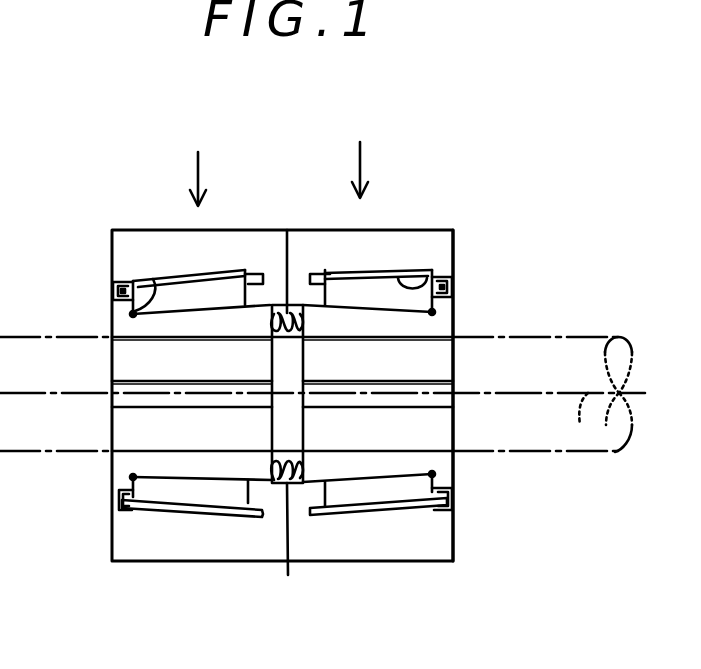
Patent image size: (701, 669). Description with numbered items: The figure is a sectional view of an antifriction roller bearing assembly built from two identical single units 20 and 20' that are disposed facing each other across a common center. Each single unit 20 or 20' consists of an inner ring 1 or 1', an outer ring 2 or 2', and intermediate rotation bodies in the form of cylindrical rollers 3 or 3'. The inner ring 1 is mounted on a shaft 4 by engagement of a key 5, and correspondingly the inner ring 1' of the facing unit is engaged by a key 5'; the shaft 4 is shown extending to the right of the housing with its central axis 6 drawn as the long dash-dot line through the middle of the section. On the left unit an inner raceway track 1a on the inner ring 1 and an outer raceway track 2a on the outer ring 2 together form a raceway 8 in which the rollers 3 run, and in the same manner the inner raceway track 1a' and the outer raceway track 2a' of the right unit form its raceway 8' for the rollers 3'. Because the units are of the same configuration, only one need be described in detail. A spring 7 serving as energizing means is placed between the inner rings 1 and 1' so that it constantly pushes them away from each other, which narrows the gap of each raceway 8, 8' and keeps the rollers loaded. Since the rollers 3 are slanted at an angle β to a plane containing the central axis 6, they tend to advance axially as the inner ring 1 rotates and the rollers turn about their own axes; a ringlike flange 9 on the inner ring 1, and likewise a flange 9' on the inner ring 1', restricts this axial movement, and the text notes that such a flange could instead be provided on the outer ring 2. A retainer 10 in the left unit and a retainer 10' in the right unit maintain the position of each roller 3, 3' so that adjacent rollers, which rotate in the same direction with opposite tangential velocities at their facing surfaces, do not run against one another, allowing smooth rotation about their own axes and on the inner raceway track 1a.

The inner ring 1 is at (192, 360).
The inner ring 1' is at (378, 360).
The inner raceway track 1a is at (201, 554).
The lower band portion (right) 1a' is at (369, 548).
The outer ring 2 is at (282, 362).
The outer ring 2' is at (453, 354).
The outer raceway track 2a is at (77, 286).
The housing side wall bracket (right) 2a' is at (480, 265).
The rollers 3 is at (200, 245).
The rollers 3' is at (368, 241).
The shaft 4 is at (553, 408).
The key 5 is at (192, 420).
The guide rail (right) 5' is at (378, 420).
The central axis 6 is at (584, 395).
The spring 7 is at (303, 548).
The raceway 8 is at (270, 377).
The spring (right) 8' is at (317, 330).
The ringlike flange 9 is at (82, 489).
The lower bracket (right) 9' is at (471, 506).
The retainer 10 is at (192, 567).
The lower clamping blade (right) 10' is at (378, 567).
The single unit 20 is at (206, 161).
The single unit 20' is at (368, 152).